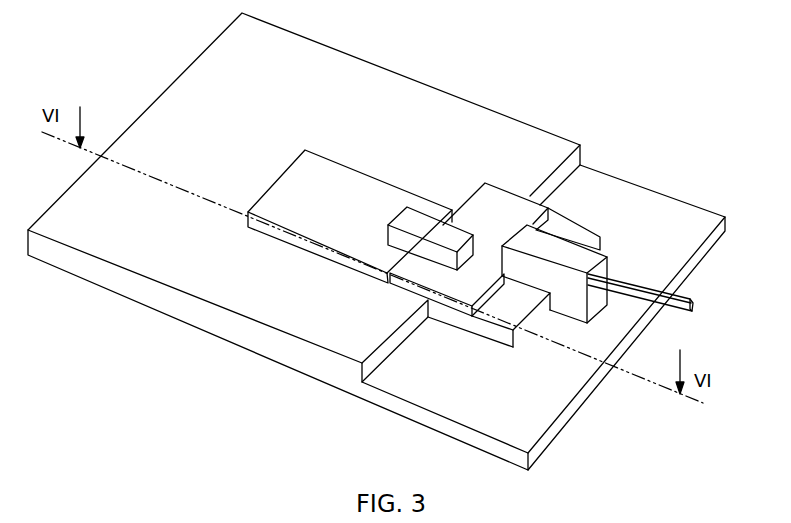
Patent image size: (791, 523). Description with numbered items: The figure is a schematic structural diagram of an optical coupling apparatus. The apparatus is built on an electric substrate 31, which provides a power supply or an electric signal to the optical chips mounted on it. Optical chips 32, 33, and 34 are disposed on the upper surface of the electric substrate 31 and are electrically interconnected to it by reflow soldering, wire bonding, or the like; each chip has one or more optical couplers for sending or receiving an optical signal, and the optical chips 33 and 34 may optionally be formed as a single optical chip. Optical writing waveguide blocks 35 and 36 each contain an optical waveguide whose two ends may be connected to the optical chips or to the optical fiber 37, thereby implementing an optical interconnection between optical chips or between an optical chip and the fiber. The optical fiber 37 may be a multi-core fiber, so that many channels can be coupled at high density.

The electric substrate 31 is at (184, 263).
The optical chip 32 is at (293, 190).
The optical chip 33 is at (495, 198).
The optical chip 34 is at (510, 306).
The optical writing waveguide block 35 is at (586, 262).
The optical writing waveguide block 36 is at (410, 217).
The optical fiber 37 is at (695, 299).